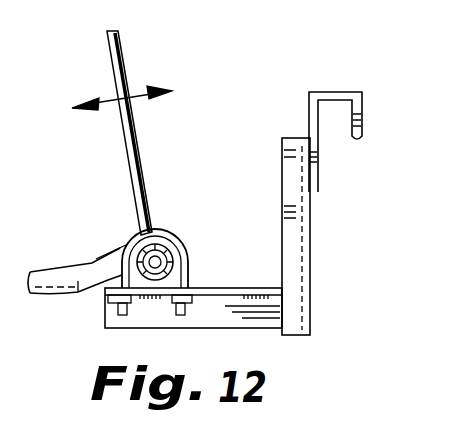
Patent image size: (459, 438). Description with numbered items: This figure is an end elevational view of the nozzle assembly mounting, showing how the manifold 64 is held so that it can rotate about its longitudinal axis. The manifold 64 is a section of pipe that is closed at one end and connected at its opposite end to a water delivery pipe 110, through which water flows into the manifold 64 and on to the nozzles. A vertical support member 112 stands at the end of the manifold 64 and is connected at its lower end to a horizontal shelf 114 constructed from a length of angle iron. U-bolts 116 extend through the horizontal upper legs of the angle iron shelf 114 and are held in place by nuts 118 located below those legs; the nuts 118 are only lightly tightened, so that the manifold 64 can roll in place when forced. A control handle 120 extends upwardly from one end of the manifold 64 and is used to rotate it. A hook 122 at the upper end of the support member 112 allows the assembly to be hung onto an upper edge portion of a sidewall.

The control handle 120 is at (123, 52).
The hook 122 is at (307, 110).
The vertical support member 112 is at (294, 168).
The horizontal shelf 114 is at (160, 317).
The nut 118 is at (103, 306).
The manifold 64 is at (170, 234).
The water delivery pipe 110 is at (185, 253).
The U-bolt 116 is at (131, 234).